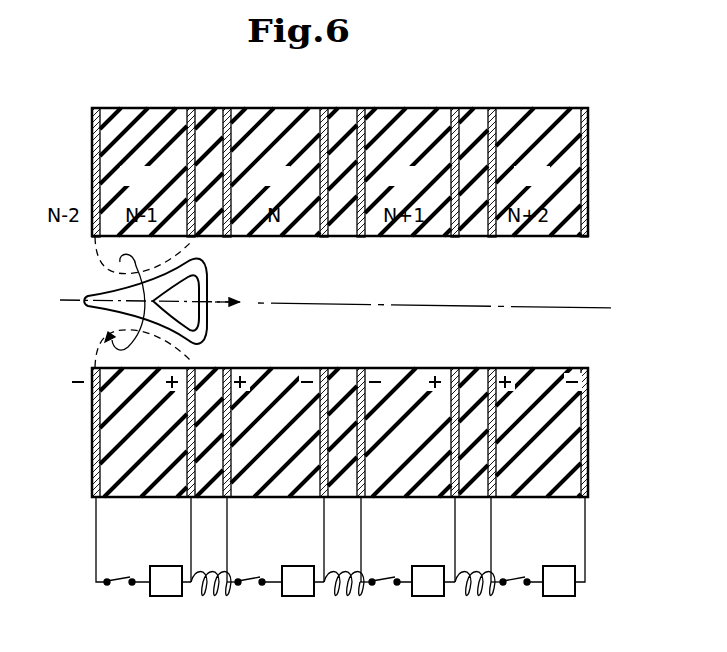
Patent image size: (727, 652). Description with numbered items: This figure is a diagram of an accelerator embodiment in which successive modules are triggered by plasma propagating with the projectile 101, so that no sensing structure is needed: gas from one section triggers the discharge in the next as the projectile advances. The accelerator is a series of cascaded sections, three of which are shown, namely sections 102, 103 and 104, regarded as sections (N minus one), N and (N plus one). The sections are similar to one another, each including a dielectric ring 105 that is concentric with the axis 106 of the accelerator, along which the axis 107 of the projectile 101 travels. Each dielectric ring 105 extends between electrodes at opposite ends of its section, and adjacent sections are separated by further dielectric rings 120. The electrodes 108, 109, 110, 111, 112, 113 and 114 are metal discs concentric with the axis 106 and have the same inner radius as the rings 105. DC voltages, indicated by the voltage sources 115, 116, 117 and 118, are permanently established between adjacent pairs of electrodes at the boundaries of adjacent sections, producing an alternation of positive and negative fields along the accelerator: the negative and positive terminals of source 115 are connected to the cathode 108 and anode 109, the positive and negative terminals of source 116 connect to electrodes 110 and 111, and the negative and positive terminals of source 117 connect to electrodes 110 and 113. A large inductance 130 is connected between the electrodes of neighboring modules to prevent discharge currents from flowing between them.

The projectile 101 is at (133, 306).
The section (N-1) 102 is at (141, 108).
The section N 103 is at (274, 108).
The section (N+1) 104 is at (407, 120).
The dielectric ring 105 is at (350, 172).
The axis of the accelerator 106 is at (593, 307).
The axis of projectile 107 is at (222, 301).
The cathode electrode 108 is at (93, 455).
The anode electrode 109 is at (186, 478).
The electrode 110 is at (229, 478).
The electrode 111 is at (318, 479).
The electrode 112 is at (364, 480).
The electrode 113 is at (450, 480).
The electrode 114 is at (490, 480).
The voltage source 115 is at (175, 596).
The DC source 116 is at (312, 596).
The DC source 117 is at (441, 596).
The voltage source 118 is at (575, 596).
The dielectric ring 120 is at (212, 108).
The inductance 130 is at (205, 595).